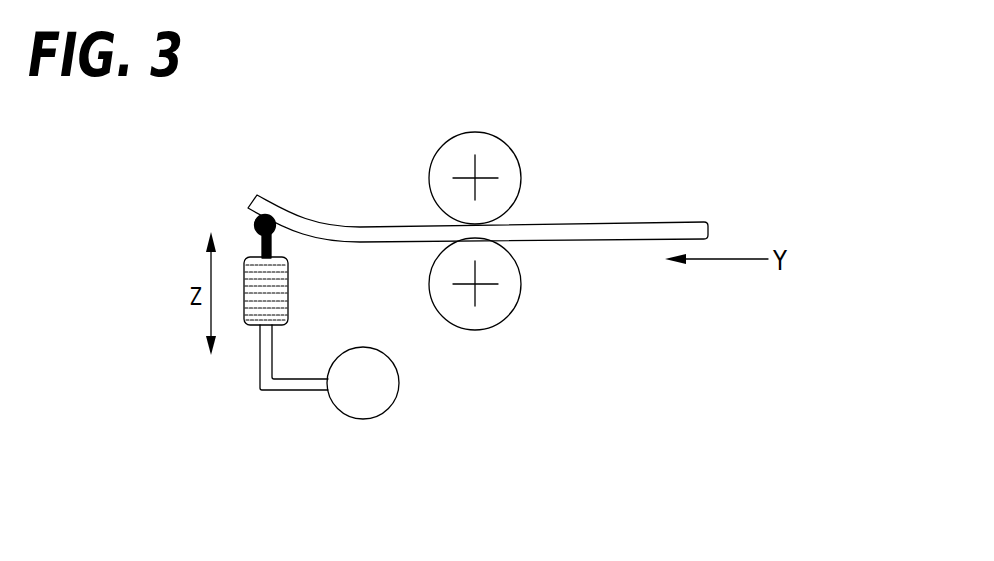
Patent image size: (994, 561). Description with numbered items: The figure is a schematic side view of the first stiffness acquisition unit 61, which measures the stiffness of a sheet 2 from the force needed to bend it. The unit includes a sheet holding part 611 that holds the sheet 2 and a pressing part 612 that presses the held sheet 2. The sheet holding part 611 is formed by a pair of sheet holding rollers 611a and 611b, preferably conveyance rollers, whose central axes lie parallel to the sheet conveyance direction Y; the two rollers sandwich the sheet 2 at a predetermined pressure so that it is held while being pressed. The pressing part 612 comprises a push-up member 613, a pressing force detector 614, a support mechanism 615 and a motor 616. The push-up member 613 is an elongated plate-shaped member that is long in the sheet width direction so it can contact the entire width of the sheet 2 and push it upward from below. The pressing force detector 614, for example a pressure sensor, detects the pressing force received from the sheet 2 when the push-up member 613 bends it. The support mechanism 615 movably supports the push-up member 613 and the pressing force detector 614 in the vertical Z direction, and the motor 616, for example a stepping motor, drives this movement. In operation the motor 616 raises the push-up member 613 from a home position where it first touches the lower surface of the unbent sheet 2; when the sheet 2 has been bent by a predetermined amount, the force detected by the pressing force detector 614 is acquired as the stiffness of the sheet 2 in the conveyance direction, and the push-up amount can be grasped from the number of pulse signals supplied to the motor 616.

The first stiffness acquisition unit 61 is at (311, 100).
The sheet 2 is at (395, 226).
The sheet holding part 611 is at (529, 179).
The sheet holding roller 611a is at (521, 178).
The sheet holding roller 611b is at (521, 285).
The pressing part 612 is at (270, 346).
The push-up member 613 is at (252, 224).
The pressing force detector 614 is at (288, 291).
The support mechanism 615 is at (259, 360).
The motor 616 is at (364, 420).